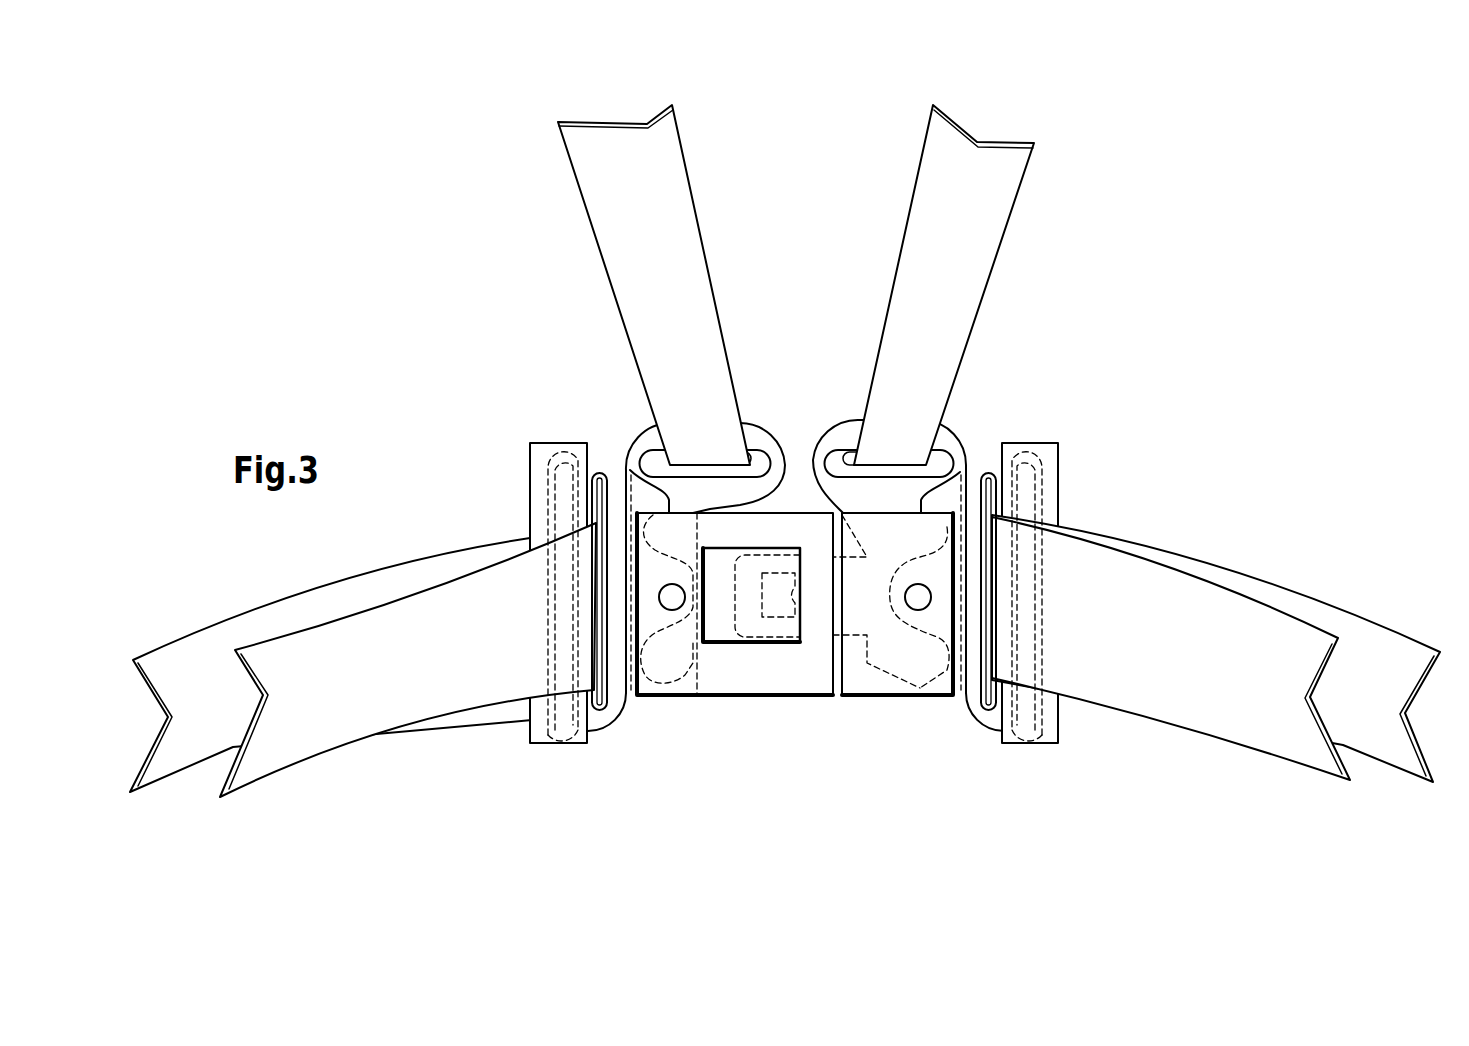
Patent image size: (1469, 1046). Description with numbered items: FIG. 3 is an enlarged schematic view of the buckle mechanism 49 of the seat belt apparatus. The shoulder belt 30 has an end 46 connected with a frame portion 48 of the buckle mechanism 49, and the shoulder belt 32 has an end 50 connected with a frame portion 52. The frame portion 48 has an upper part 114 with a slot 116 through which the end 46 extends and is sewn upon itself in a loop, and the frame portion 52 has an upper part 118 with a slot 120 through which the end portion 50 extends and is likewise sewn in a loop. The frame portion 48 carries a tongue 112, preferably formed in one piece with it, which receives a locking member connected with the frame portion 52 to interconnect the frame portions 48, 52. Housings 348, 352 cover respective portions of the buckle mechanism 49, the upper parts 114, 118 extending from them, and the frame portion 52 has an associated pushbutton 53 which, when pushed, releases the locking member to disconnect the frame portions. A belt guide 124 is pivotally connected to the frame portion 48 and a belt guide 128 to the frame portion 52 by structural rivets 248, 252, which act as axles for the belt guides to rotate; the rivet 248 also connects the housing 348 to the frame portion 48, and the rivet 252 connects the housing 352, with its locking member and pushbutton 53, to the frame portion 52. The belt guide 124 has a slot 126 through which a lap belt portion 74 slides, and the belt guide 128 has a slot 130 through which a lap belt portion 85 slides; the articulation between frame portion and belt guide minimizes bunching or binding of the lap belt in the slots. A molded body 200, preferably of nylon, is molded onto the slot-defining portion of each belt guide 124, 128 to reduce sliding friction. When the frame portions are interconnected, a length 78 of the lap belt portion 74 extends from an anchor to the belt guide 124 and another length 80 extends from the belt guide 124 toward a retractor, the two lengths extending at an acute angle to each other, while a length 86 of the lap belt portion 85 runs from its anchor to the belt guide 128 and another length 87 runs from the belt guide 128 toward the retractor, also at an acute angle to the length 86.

The shoulder belt 30 is at (993, 213).
The shoulder belt 32 is at (595, 165).
The end 46 is at (900, 432).
The frame portion 48 is at (898, 498).
The buckle mechanism 49 is at (812, 330).
The end portion 50 is at (703, 423).
The frame portion 52 is at (628, 450).
The pushbutton 53 is at (718, 623).
The lap belt portion 74 is at (1293, 540).
The length 78 is at (1295, 727).
The length 80 is at (1383, 633).
The lap belt portion 85 is at (289, 564).
The length 86 is at (290, 743).
The length 87 is at (182, 673).
The tongue 112 is at (860, 615).
The upper part 114 is at (948, 442).
The slot 116 is at (875, 468).
The upper part 118 is at (653, 440).
The slot 120 is at (718, 470).
The belt guide 124 is at (987, 463).
The slot 126 is at (992, 700).
The belt guide 128 is at (607, 462).
The slot 130 is at (593, 700).
The molded body 200 is at (540, 727).
The structural rivet 248 is at (920, 596).
The structural rivet 252 is at (672, 597).
The housing 348 is at (877, 685).
The housing 352 is at (703, 683).